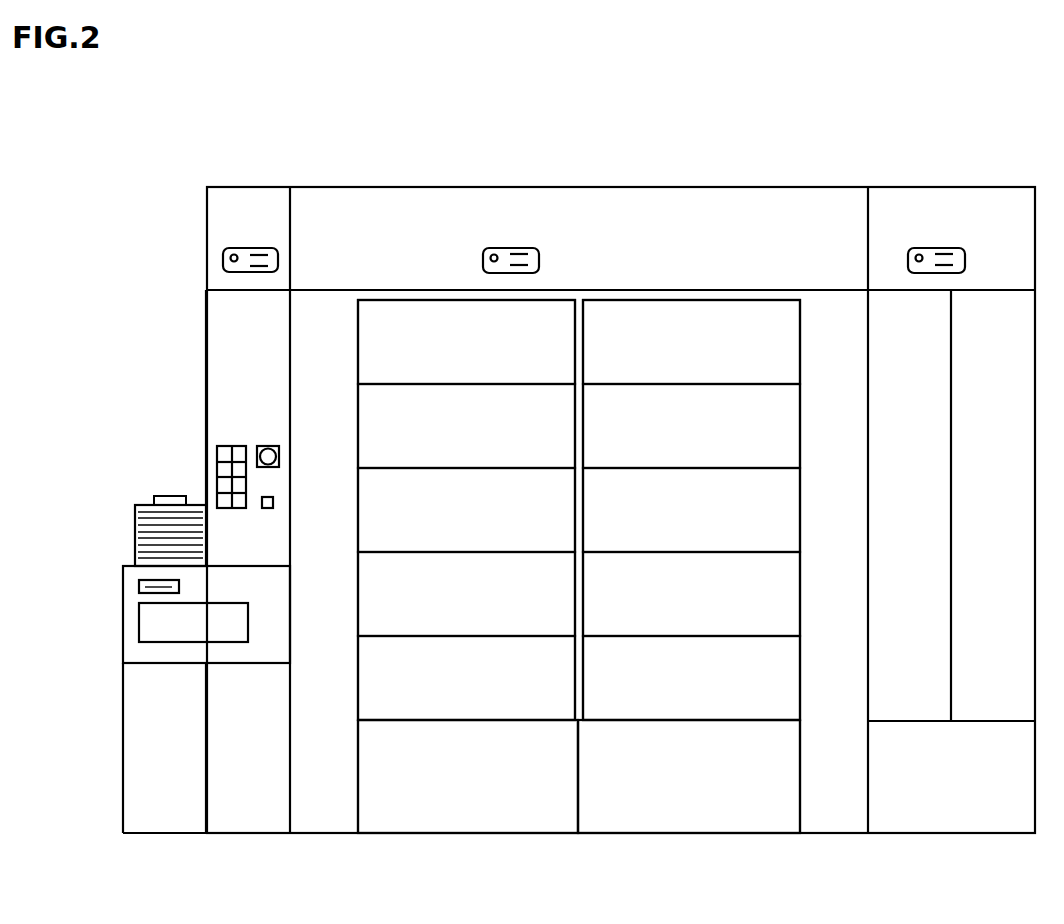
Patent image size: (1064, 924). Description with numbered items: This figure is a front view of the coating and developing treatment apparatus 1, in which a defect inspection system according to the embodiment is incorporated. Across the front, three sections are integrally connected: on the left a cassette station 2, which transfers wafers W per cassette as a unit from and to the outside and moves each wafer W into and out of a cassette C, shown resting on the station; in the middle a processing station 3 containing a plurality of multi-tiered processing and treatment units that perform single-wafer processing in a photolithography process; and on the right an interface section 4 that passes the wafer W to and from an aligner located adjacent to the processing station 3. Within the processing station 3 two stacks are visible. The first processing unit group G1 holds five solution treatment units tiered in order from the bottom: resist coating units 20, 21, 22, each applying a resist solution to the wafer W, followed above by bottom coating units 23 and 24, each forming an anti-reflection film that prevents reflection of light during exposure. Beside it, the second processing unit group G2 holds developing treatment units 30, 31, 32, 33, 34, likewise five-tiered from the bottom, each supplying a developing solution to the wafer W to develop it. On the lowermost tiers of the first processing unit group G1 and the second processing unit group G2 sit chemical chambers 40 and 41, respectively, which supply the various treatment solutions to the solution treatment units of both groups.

The coating and developing treatment apparatus 1 is at (650, 141).
The cassette station 2 is at (272, 187).
The processing station 3 is at (418, 187).
The interface section 4 is at (996, 187).
The cassette C is at (142, 506).
The wafer W is at (143, 505).
The first processing unit group G1 is at (417, 300).
The second processing unit group G2 is at (693, 300).
The resist coating unit 20 is at (373, 682).
The resist coating unit 21 is at (373, 598).
The resist coating unit 22 is at (373, 514).
The bottom coating unit 23 is at (373, 430).
The bottom coating unit 24 is at (373, 346).
The developing treatment unit 30 is at (770, 682).
The developing treatment unit 31 is at (770, 598).
The developing treatment unit 32 is at (770, 514).
The developing treatment unit 33 is at (770, 430).
The developing treatment unit 34 is at (770, 346).
The chemical chamber 40 is at (469, 820).
The chemical chamber 41 is at (702, 820).